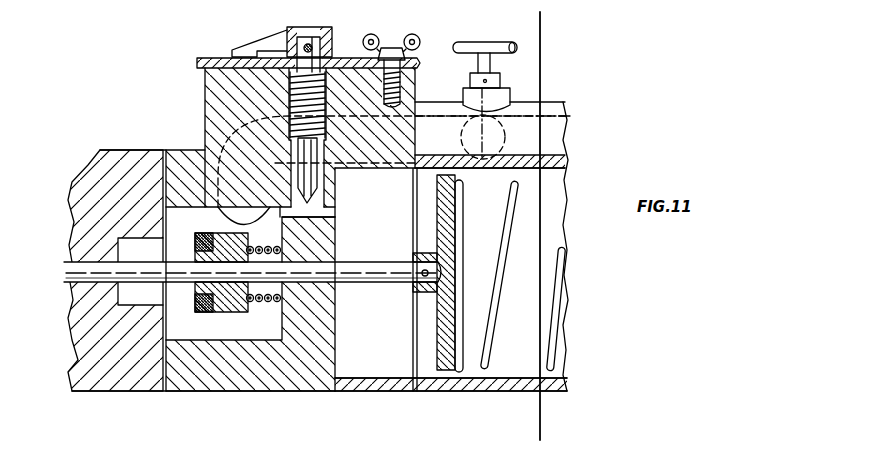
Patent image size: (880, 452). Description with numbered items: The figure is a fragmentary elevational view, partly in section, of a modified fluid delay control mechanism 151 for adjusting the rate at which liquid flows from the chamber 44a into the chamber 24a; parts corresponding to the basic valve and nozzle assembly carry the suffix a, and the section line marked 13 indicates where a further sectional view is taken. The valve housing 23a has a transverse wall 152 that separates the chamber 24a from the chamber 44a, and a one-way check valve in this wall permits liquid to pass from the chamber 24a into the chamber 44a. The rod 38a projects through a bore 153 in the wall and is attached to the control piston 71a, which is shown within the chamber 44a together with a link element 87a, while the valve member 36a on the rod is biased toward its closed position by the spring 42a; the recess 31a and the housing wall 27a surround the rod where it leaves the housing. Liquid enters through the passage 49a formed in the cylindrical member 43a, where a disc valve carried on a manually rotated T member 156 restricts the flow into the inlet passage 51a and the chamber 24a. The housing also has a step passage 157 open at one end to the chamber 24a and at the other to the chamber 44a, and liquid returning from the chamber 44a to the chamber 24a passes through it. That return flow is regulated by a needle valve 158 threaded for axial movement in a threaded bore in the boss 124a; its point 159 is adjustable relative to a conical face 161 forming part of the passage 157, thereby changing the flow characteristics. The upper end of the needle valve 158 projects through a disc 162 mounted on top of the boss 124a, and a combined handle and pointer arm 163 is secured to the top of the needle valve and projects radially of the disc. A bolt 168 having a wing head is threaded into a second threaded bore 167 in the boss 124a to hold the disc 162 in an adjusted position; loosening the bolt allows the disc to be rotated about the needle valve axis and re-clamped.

The modified fluid delay control mechanism 151 is at (160, 33).
The combined handle and pointer arm 163 is at (255, 42).
The needle valve 158 is at (309, 62).
The bolt 168 is at (387, 48).
The disc 162 is at (418, 62).
The T member 156 is at (498, 45).
The section line 13- 13 is at (552, 427).
The cylindrical member 43a is at (557, 100).
The passage 49a is at (560, 127).
The boss 124a is at (220, 87).
The inlet passage 51a is at (220, 145).
The threaded bore 167 is at (398, 87).
The rod 38a is at (66, 272).
The valve member 36a is at (222, 232).
The conical face 161 is at (247, 221).
The point 159 is at (325, 190).
The step passage 157 is at (307, 213).
The bore 153 is at (323, 250).
The rod clearance recess 31a is at (137, 293).
The spring 42a is at (263, 304).
The transverse wall 152 is at (317, 321).
The chamber 44a is at (387, 362).
The housing wall 27a is at (113, 378).
The chamber 24a is at (200, 330).
The valve housing 23a is at (223, 380).
The control piston 71a is at (446, 321).
The link rod 87a is at (497, 316).